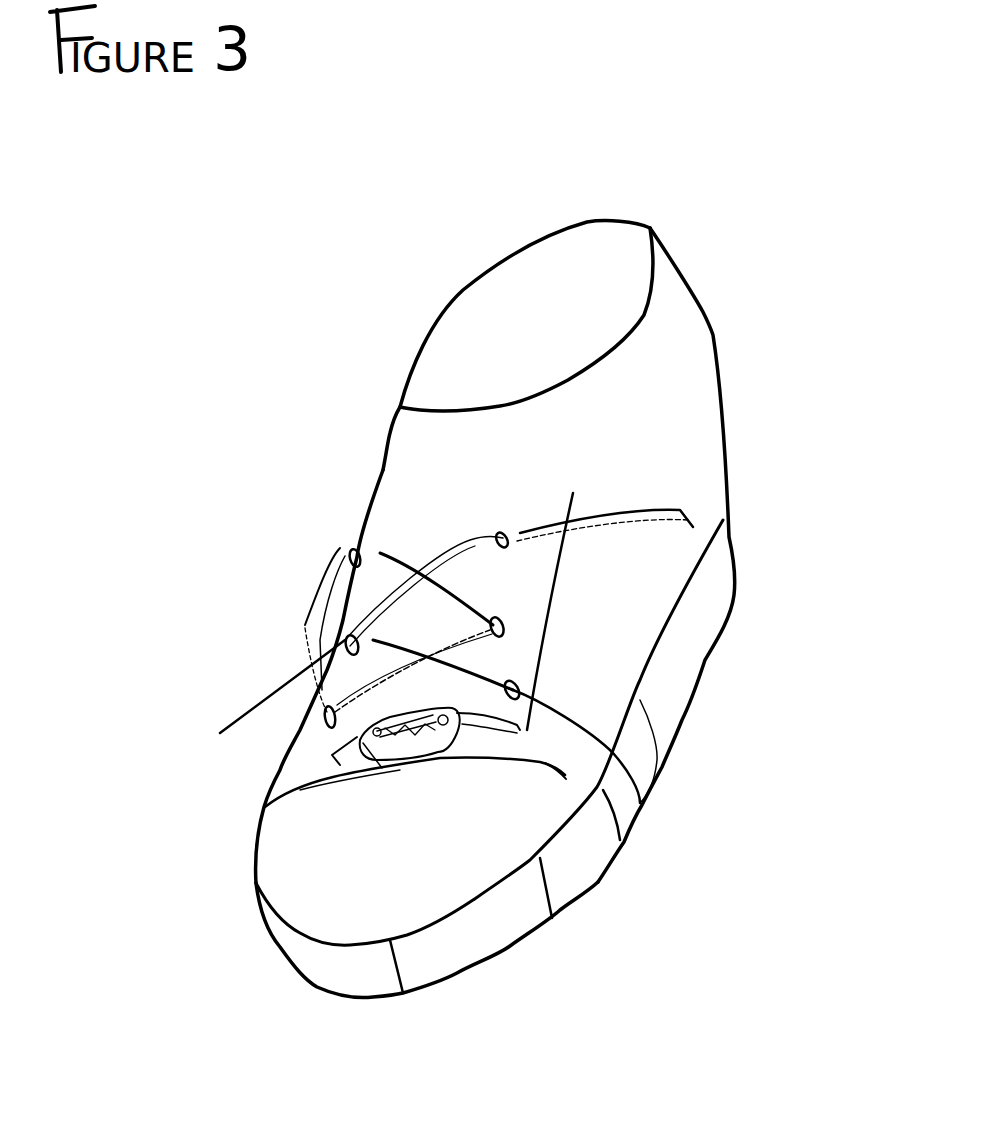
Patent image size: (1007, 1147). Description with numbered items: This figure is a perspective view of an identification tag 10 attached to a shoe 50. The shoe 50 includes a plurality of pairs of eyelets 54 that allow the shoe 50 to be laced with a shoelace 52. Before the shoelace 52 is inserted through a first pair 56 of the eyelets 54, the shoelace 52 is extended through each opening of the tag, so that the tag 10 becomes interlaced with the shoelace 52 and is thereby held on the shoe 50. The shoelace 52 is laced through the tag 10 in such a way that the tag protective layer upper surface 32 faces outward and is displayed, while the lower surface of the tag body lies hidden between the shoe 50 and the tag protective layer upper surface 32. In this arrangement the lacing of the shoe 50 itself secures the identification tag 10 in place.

The identification tag 10 is at (378, 760).
The tag protective layer upper surface 32 is at (426, 738).
The shoe 50 is at (715, 327).
The shoelace 52 is at (673, 510).
The eyelets 54 is at (325, 717).
The first pair of eyelets 56 is at (333, 728).